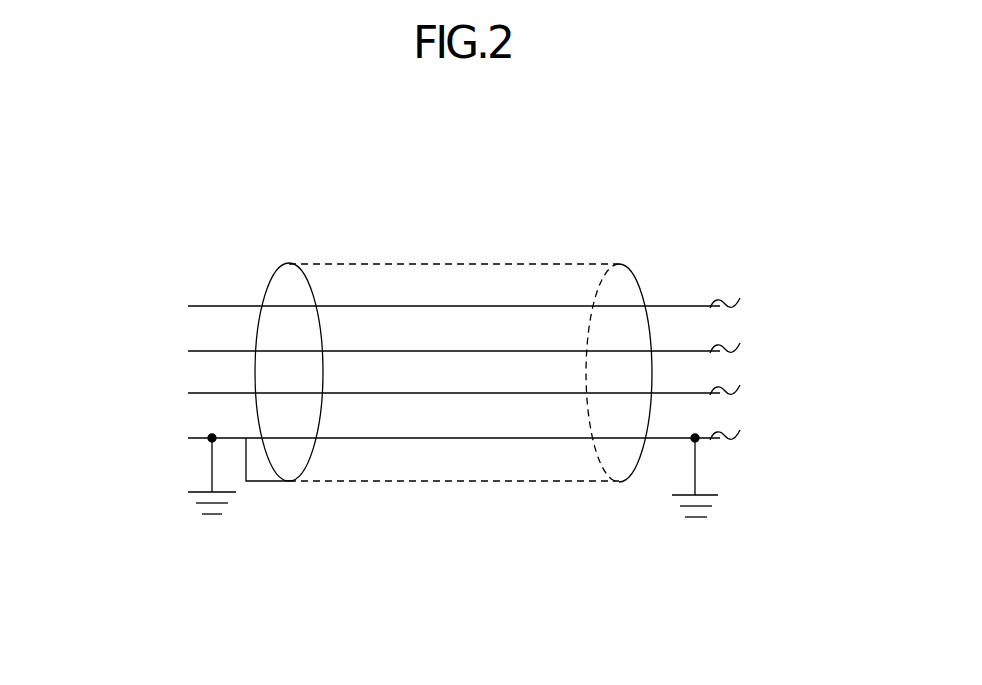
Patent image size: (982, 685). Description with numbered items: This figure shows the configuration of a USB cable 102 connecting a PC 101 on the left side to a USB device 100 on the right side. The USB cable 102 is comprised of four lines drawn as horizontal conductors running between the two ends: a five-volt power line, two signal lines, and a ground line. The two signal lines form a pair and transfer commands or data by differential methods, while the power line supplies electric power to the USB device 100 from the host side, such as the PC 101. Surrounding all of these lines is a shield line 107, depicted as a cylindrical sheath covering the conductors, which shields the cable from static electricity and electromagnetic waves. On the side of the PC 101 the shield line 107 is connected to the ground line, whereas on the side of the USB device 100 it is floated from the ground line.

The USB device 100 is at (681, 364).
The PC 101 is at (250, 362).
The USB cable 102 is at (364, 252).
The shield line 107 is at (363, 481).